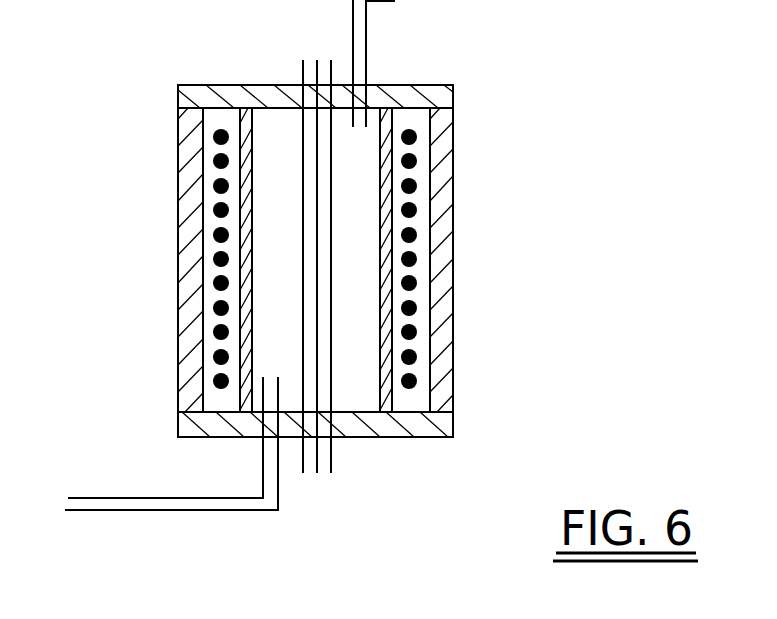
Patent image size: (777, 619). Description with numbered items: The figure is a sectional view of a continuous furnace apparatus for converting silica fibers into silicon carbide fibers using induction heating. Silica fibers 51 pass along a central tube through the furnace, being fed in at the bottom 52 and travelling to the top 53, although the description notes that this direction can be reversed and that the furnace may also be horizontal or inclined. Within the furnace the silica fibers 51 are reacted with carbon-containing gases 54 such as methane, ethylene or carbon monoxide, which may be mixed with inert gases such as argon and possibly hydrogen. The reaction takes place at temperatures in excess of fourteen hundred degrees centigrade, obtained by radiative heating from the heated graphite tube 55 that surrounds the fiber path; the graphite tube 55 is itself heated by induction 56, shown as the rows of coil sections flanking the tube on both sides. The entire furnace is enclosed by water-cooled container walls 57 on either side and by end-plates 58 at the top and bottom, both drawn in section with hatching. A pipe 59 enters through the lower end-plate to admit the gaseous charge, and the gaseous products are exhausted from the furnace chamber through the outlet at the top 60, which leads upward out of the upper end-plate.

The silica fibers 51 is at (331, 193).
The bottom 52 is at (360, 495).
The top 53 is at (297, 34).
The carbon-containing gases 54 is at (355, 285).
The graphite tube 55 is at (381, 229).
The induction 56 is at (220, 167).
The water-cooled container walls 57 is at (453, 323).
The end-plates 58 is at (390, 426).
The inlet pipe 59 is at (142, 535).
The top exhaust 60 is at (475, 23).